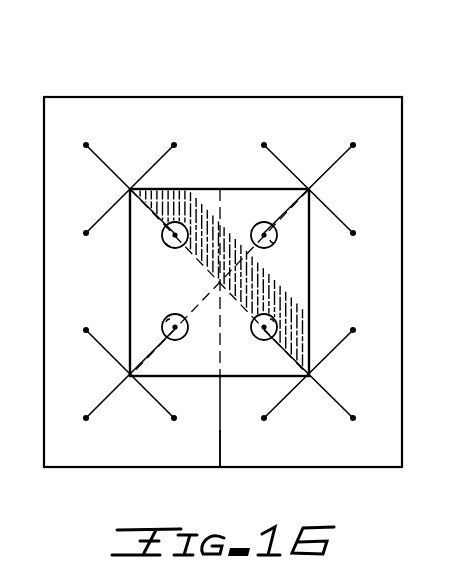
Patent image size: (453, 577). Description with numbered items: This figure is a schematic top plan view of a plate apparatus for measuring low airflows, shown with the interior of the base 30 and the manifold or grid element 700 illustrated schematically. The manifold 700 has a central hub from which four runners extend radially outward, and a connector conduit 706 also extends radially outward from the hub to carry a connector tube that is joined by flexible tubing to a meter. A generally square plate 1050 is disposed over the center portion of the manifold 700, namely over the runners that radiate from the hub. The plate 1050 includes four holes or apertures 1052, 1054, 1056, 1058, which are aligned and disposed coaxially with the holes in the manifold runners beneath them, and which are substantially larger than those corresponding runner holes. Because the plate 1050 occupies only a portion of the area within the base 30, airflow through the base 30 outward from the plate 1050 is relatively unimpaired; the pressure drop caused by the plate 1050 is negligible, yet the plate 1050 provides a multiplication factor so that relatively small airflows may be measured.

The base 30 is at (150, 88).
The plate 1050 is at (208, 211).
The hole or aperture 1052 is at (164, 242).
The hole or aperture 1054 is at (276, 245).
The hole or aperture 1056 is at (275, 322).
The hole or aperture 1058 is at (163, 325).
The connector conduit 706 is at (222, 404).
The manifold or grid element 700 is at (232, 441).